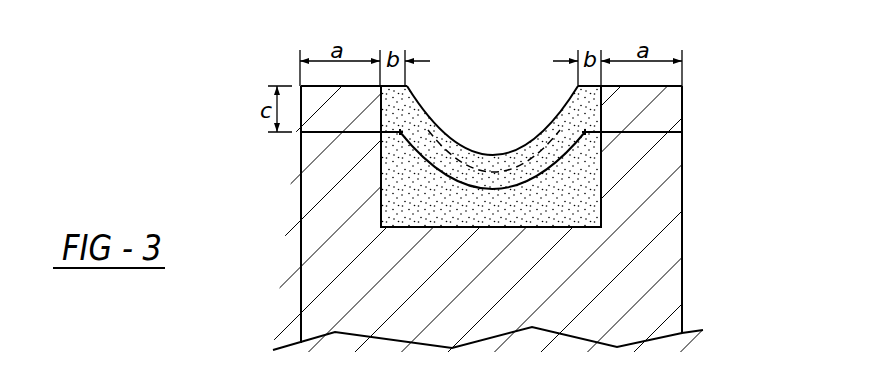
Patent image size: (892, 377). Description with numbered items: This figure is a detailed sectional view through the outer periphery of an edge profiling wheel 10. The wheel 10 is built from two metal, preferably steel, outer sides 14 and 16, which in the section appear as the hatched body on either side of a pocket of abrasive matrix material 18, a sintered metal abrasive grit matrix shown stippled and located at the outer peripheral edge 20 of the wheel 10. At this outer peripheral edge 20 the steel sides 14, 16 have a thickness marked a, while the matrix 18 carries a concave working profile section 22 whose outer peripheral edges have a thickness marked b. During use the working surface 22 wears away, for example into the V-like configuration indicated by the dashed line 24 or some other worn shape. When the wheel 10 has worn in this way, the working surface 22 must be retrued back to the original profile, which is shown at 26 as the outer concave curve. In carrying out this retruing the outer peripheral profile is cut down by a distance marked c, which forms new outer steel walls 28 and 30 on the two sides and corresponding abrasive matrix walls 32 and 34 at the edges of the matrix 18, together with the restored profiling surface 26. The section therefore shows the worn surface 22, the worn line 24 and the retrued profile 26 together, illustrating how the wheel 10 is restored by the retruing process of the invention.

The edge profiling wheel 10 is at (213, 136).
The outer side 14 is at (301, 202).
The outer side 16 is at (682, 168).
The abrasive matrix material 18 is at (583, 212).
The outer peripheral edge 20 is at (659, 86).
The concave working profile section 22 is at (416, 112).
The worn V-like surface configuration 24 is at (451, 145).
The original profile / profiling surface 26 is at (462, 183).
The outer steel wall 28 is at (330, 130).
The outer steel wall 30 is at (651, 132).
The abrasive matrix wall 32 is at (400, 132).
The abrasive matrix wall 34 is at (586, 131).